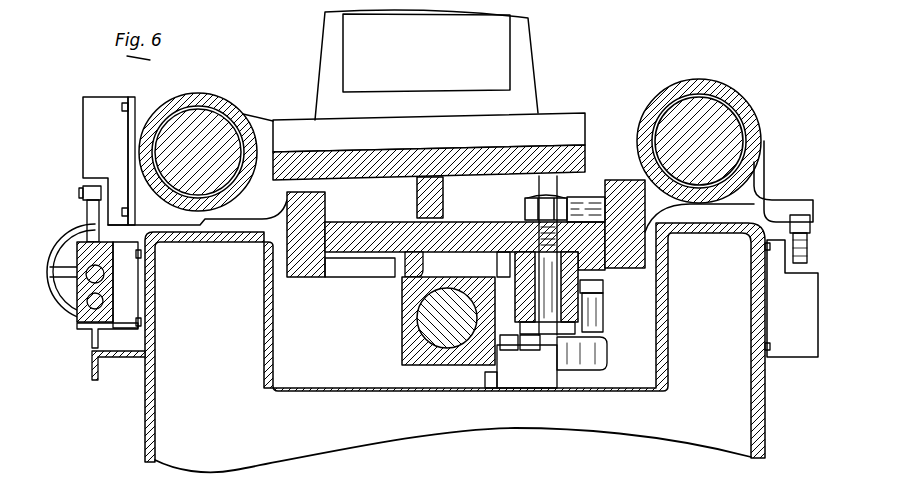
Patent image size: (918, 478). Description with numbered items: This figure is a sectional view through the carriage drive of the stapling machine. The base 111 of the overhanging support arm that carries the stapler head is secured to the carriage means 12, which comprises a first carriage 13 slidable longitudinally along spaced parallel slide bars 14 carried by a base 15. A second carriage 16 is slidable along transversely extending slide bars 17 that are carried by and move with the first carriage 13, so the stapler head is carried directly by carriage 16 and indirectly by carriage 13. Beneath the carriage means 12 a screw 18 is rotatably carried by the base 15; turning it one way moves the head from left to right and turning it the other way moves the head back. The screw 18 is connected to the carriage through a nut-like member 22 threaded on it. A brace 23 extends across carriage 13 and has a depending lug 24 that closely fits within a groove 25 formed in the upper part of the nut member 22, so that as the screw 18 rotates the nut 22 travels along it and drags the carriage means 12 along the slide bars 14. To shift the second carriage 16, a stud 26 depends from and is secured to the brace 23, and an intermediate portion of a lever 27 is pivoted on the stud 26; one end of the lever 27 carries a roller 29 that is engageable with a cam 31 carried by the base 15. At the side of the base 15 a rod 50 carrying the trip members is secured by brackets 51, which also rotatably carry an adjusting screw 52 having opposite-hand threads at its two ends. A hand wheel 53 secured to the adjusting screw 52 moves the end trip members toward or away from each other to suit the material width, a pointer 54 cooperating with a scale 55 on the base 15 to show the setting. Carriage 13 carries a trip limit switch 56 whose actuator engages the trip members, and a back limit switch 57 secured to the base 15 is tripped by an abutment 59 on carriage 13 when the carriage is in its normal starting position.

The base 111 is at (536, 40).
The carriage means 12 is at (714, 77).
The first carriage 13 is at (620, 122).
The slide bars 14 is at (212, 128).
The base 15 is at (772, 426).
The second carriage 16 is at (354, 168).
The slide bars 17 is at (598, 198).
The screw 18 is at (438, 324).
The nut-like member 22 is at (418, 353).
The brace 23 is at (365, 238).
The depending lug 24 is at (396, 262).
The groove 25 is at (418, 266).
The stud 26 is at (531, 193).
The lever 27 is at (590, 303).
The roller 29 is at (602, 354).
The cam 31 is at (528, 376).
The rod 50 is at (104, 300).
The brackets 51 is at (125, 322).
The adjusting screw 52 is at (104, 273).
The hand wheel 53 is at (54, 240).
The pointer 54 is at (94, 339).
The scale 55 is at (115, 358).
The limit switch 56 is at (100, 122).
The limit switch 57 is at (795, 338).
The abutment 59 is at (763, 186).